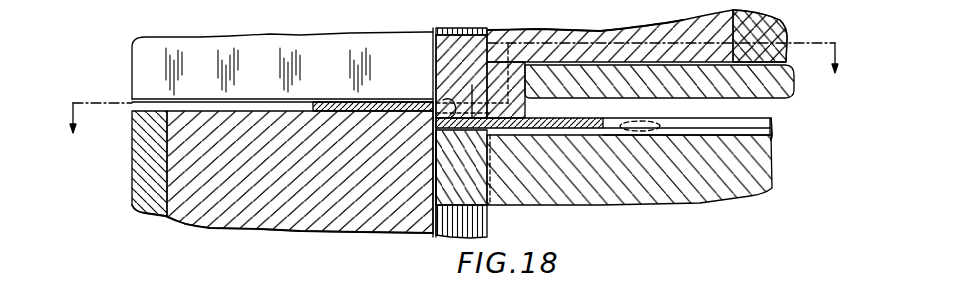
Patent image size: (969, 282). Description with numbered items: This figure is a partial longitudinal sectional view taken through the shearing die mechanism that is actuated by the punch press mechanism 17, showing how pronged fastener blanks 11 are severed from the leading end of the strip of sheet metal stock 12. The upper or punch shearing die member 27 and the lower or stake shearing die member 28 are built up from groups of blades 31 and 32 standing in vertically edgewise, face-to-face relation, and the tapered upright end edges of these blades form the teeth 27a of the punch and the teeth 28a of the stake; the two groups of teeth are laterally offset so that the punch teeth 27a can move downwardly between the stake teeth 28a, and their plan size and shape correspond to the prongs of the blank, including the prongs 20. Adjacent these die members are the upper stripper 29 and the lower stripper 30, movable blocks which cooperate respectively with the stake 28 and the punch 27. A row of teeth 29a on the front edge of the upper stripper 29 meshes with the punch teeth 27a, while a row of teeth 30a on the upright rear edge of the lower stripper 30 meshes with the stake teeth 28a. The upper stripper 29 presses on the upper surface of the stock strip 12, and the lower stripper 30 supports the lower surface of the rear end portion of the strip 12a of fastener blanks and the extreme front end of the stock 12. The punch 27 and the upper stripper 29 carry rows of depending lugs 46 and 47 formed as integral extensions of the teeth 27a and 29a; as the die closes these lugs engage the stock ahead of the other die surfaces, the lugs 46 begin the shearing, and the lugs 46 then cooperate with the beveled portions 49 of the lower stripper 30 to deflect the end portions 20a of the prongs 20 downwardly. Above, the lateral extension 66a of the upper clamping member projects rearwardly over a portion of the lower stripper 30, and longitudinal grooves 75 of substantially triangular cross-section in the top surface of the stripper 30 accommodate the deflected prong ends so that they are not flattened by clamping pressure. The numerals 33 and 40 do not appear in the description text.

The pronged fastener blank 11 is at (480, 76).
The strip of sheet metal stock 12 is at (325, 106).
The strip of fastener blanks 12a is at (572, 135).
The punch press mechanism 17 is at (448, 102).
The prong 20 is at (511, 170).
The end portion of prong 20a is at (440, 132).
The punch shearing die member 27 is at (680, 28).
The teeth of the punch 27a is at (433, 62).
The stake shearing die member 28 is at (283, 222).
The teeth of the stake 28a is at (480, 214).
The upper stripper 29 is at (300, 26).
The teeth of the upper stripper 29a is at (448, 29).
The lower stripper 30 is at (717, 198).
The teeth of the lower stripper 30a is at (437, 183).
The blades of the punch 31 is at (600, 29).
The blades of the stake 32 is at (212, 227).
The end wall 33 is at (770, 26).
The end strip 40 is at (143, 170).
The depending lugs of the punch 46 is at (443, 108).
The depending lugs of the upper stripper 47 is at (659, 81).
The beveled portions of the lower stripper 49 is at (437, 155).
The lateral extension of upper clamping member 66a is at (778, 100).
The longitudinal grooves 75 is at (773, 137).